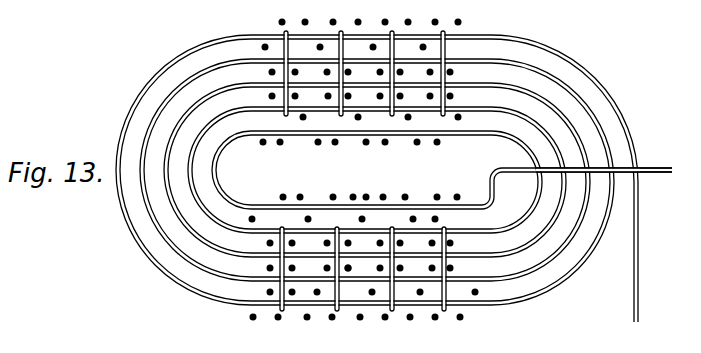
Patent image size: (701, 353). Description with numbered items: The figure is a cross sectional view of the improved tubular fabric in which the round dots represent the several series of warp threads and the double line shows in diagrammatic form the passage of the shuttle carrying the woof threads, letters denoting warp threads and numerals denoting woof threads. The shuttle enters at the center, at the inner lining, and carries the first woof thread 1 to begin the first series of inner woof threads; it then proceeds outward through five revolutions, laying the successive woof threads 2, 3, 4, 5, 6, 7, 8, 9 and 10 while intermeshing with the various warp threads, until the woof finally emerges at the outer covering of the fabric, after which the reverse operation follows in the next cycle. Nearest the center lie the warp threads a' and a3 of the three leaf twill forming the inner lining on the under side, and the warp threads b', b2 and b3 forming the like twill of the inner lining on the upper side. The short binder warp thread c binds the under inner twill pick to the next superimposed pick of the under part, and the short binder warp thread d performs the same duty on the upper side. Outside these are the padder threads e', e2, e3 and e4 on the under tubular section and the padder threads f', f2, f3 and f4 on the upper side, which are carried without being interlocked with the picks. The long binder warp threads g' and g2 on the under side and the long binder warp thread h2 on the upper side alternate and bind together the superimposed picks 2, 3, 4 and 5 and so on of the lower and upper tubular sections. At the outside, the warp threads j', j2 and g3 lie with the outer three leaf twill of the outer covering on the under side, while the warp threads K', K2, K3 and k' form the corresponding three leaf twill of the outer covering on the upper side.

The woof thread 1 is at (470, 208).
The woof thread 2 is at (516, 131).
The woof thread 3 is at (472, 231).
The woof thread 4 is at (511, 114).
The woof thread 5 is at (475, 256).
The woof thread 6 is at (521, 91).
The woof thread 7 is at (477, 281).
The woof thread 8 is at (520, 67).
The woof thread 9 is at (475, 306).
The woof thread 10 is at (567, 61).
The warp thread K2 is at (279, 22).
The warp thread K' is at (317, 17).
The warp thread K3 is at (262, 47).
The warp thread k' is at (311, 51).
The contact f4 is at (269, 72).
The padder thread f2 is at (299, 73).
The padder thread f' is at (252, 97).
The contact f3 is at (299, 97).
The long binder warp thread h2 is at (461, 118).
The warp thread b3 is at (261, 145).
The warp thread b' is at (295, 143).
The warp thread b2 is at (279, 146).
The warp thread a3 is at (286, 195).
The warp thread a' is at (320, 188).
The short binder warp thread d is at (365, 146).
The short binder warp thread c is at (368, 195).
The long binder warp thread g2 is at (267, 244).
The padder thread e' is at (305, 244).
The contact e3 is at (267, 268).
The padder thread e2 is at (344, 268).
The contact e4 is at (266, 292).
The long binder warp thread g' is at (274, 293).
The warp thread j' is at (307, 293).
The contact g3 is at (253, 321).
The warp thread j2 is at (280, 321).